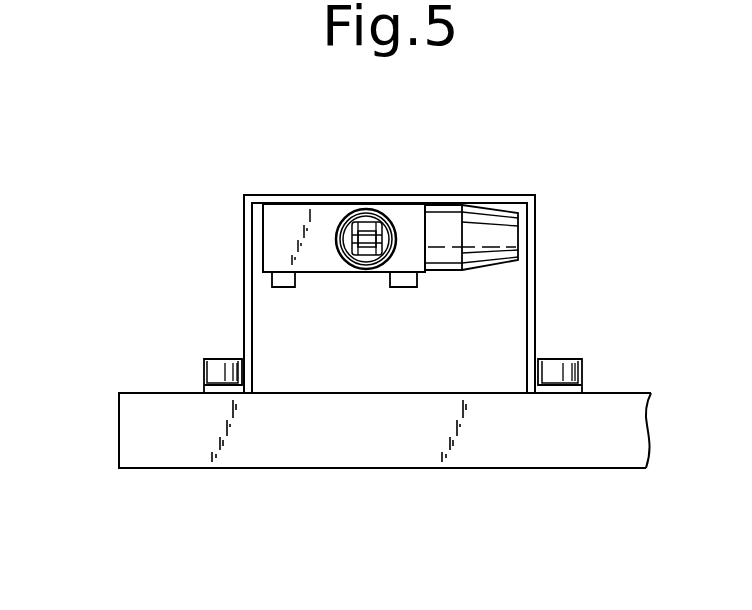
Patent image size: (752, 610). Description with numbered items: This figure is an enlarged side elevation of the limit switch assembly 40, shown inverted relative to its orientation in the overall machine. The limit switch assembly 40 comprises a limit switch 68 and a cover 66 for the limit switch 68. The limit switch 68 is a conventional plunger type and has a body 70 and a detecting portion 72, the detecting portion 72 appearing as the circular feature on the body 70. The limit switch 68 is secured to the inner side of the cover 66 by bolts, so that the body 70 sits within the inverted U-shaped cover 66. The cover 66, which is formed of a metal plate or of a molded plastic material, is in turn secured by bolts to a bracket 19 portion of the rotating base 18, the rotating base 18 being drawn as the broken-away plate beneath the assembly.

The rotating base 18 is at (128, 479).
The bracket 19 is at (309, 468).
The limit switch assembly 40 is at (241, 143).
The cover 66 is at (240, 199).
The limit switch 68 is at (328, 285).
The body 70 is at (294, 210).
The detecting portion 72 is at (366, 212).